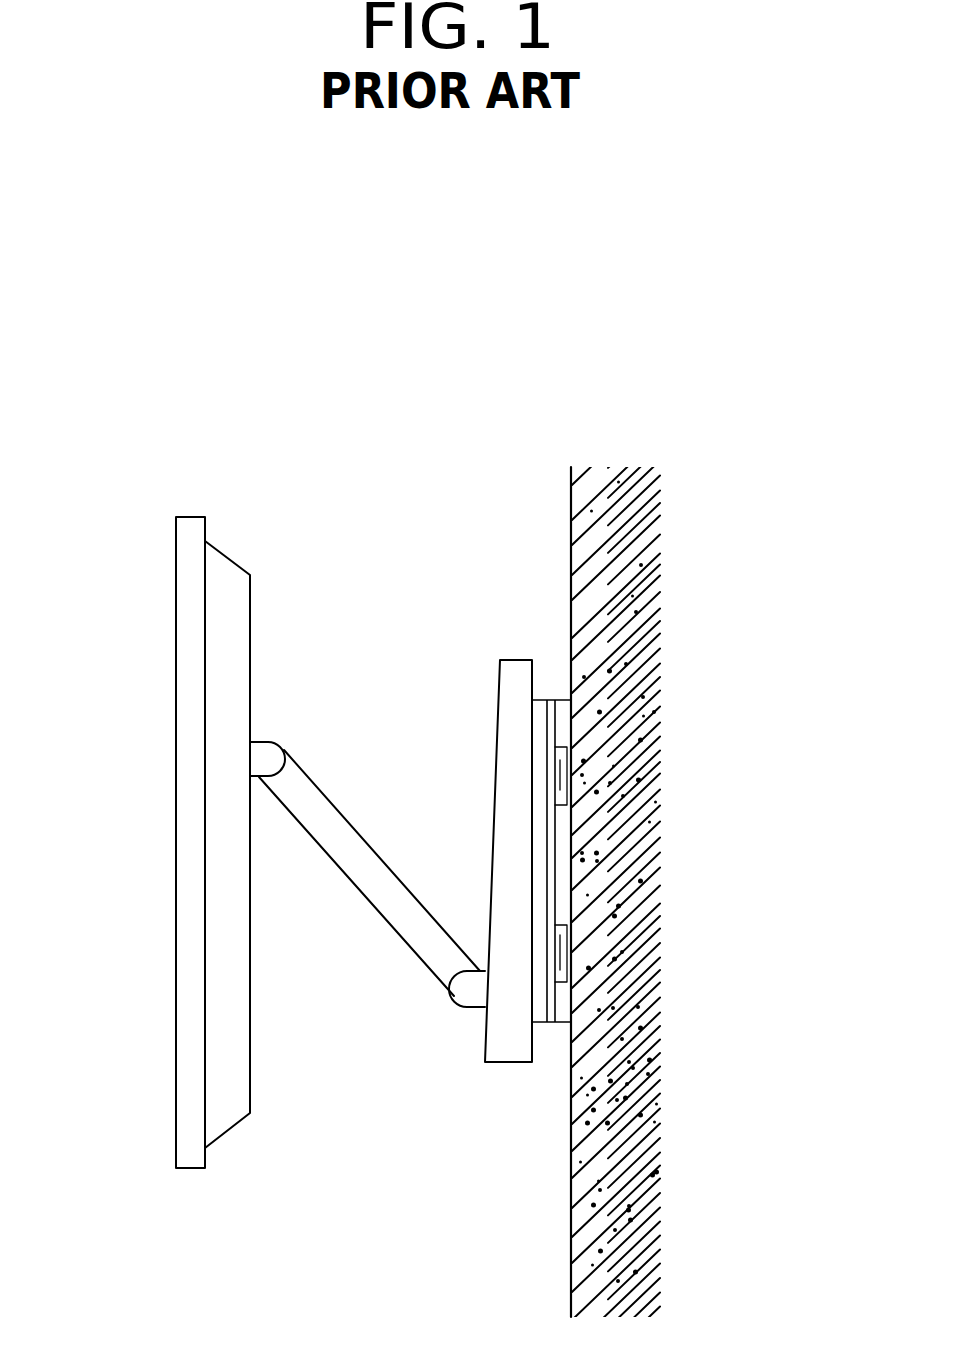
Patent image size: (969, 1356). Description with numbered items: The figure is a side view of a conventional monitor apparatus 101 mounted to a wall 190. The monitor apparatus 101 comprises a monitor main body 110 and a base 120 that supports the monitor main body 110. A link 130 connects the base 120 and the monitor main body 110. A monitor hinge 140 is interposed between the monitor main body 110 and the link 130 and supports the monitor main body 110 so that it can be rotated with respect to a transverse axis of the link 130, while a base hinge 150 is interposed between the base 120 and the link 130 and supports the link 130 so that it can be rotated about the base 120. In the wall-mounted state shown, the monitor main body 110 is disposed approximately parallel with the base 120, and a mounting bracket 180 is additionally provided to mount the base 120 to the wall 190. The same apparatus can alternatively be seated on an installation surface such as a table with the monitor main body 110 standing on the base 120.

The monitor apparatus 101 is at (435, 438).
The monitor main body 110 is at (183, 848).
The base 120 is at (517, 728).
The link 130 is at (377, 893).
The monitor hinge 140 is at (250, 758).
The base hinge 150 is at (433, 1128).
The mounting bracket 180 is at (566, 872).
The wall 190 is at (660, 1130).